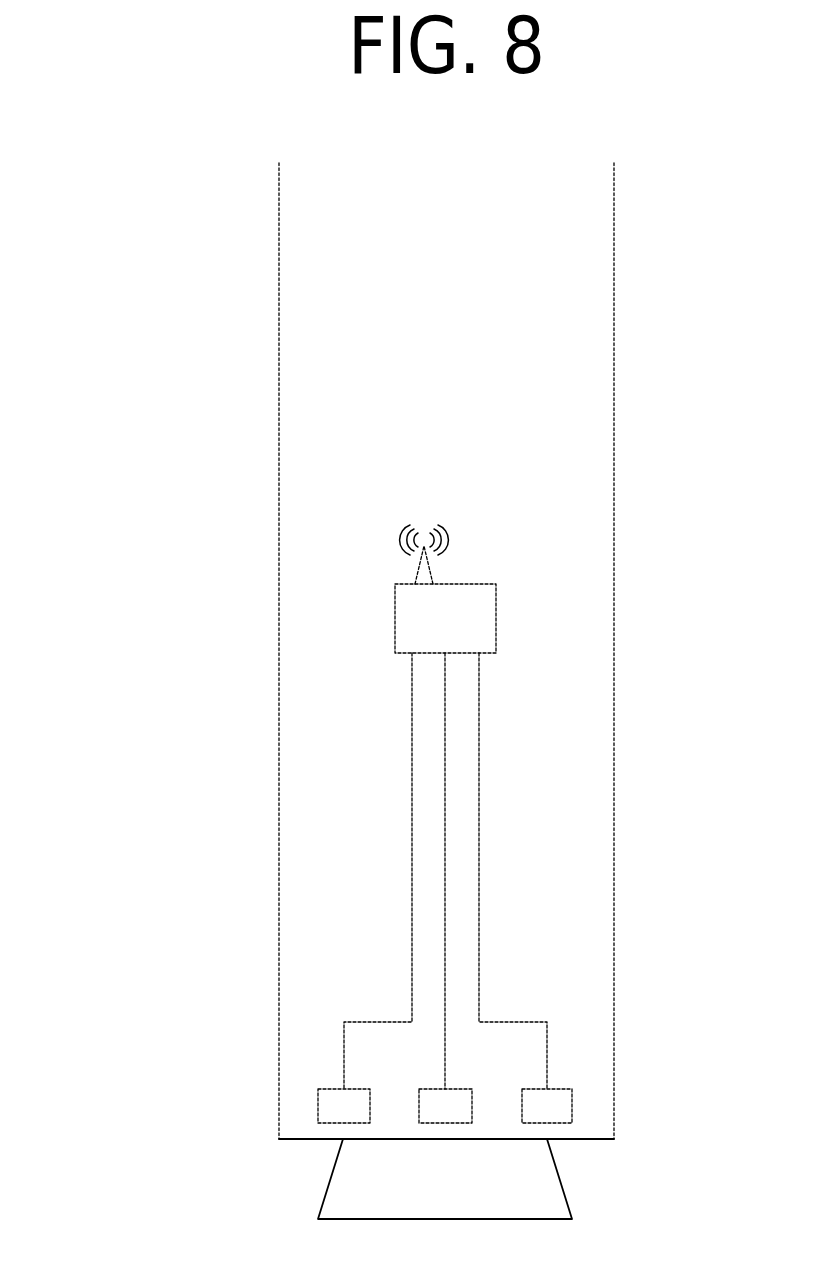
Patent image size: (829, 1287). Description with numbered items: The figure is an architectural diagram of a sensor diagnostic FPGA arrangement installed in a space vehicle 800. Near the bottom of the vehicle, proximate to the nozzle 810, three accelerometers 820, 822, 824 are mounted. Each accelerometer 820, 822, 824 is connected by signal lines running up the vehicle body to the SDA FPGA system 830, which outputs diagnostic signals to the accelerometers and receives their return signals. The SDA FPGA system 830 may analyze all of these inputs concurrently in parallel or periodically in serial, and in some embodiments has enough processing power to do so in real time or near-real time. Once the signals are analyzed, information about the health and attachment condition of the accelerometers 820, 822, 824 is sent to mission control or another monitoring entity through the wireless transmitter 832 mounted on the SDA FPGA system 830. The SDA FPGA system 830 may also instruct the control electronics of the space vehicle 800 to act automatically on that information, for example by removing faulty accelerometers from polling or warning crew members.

The space vehicle 800 is at (134, 134).
The nozzle 810 is at (558, 1180).
The accelerometer 820 is at (318, 1105).
The accelerometer 822 is at (472, 1105).
The accelerometer 824 is at (572, 1105).
The SDA FPGA system 830 is at (496, 618).
The wireless transmitter 832 is at (417, 563).